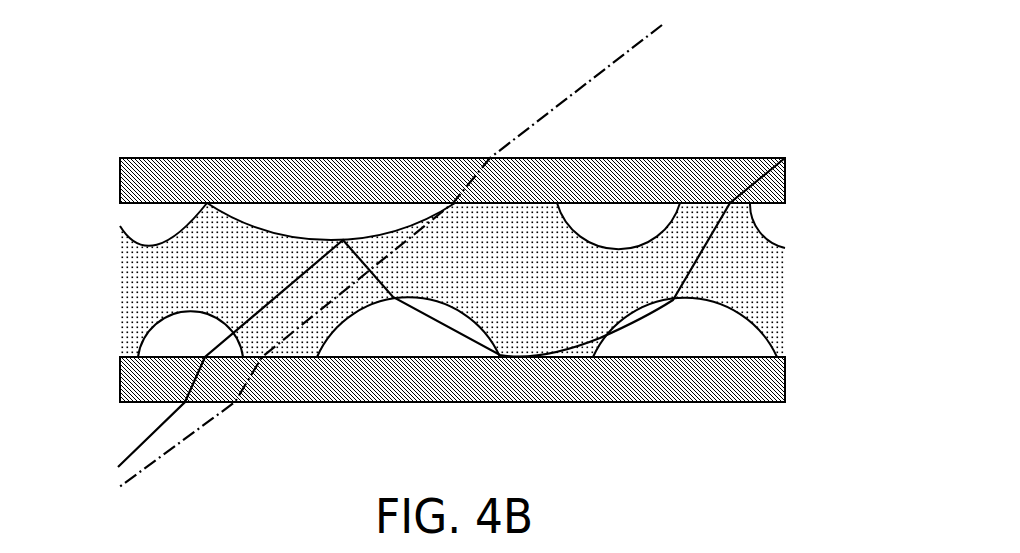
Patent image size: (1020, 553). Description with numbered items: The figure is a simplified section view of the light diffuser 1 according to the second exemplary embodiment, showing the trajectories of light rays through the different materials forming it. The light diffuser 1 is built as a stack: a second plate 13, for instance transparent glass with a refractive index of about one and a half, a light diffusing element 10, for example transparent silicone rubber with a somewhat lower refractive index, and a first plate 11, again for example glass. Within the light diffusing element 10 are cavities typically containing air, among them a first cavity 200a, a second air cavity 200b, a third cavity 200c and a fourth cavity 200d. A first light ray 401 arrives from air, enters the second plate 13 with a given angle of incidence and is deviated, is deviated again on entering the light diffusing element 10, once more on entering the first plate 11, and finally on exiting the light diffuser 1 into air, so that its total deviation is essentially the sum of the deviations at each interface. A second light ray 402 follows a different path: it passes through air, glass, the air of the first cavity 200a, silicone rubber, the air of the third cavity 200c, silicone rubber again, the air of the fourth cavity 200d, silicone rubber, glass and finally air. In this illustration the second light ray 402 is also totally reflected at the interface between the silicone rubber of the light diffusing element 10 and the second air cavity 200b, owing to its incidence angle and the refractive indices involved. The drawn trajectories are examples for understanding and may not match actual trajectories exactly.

The light diffuser 1 is at (115, 125).
The first plate 11 is at (777, 182).
The light diffusing element 10 is at (777, 292).
The second plate 13 is at (777, 380).
The first cavity 200a is at (183, 337).
The second air cavity 200b is at (352, 218).
The third cavity 200c is at (407, 325).
The fourth cavity 200d is at (683, 325).
The first light ray 401 is at (583, 87).
The second light ray 402 is at (148, 433).